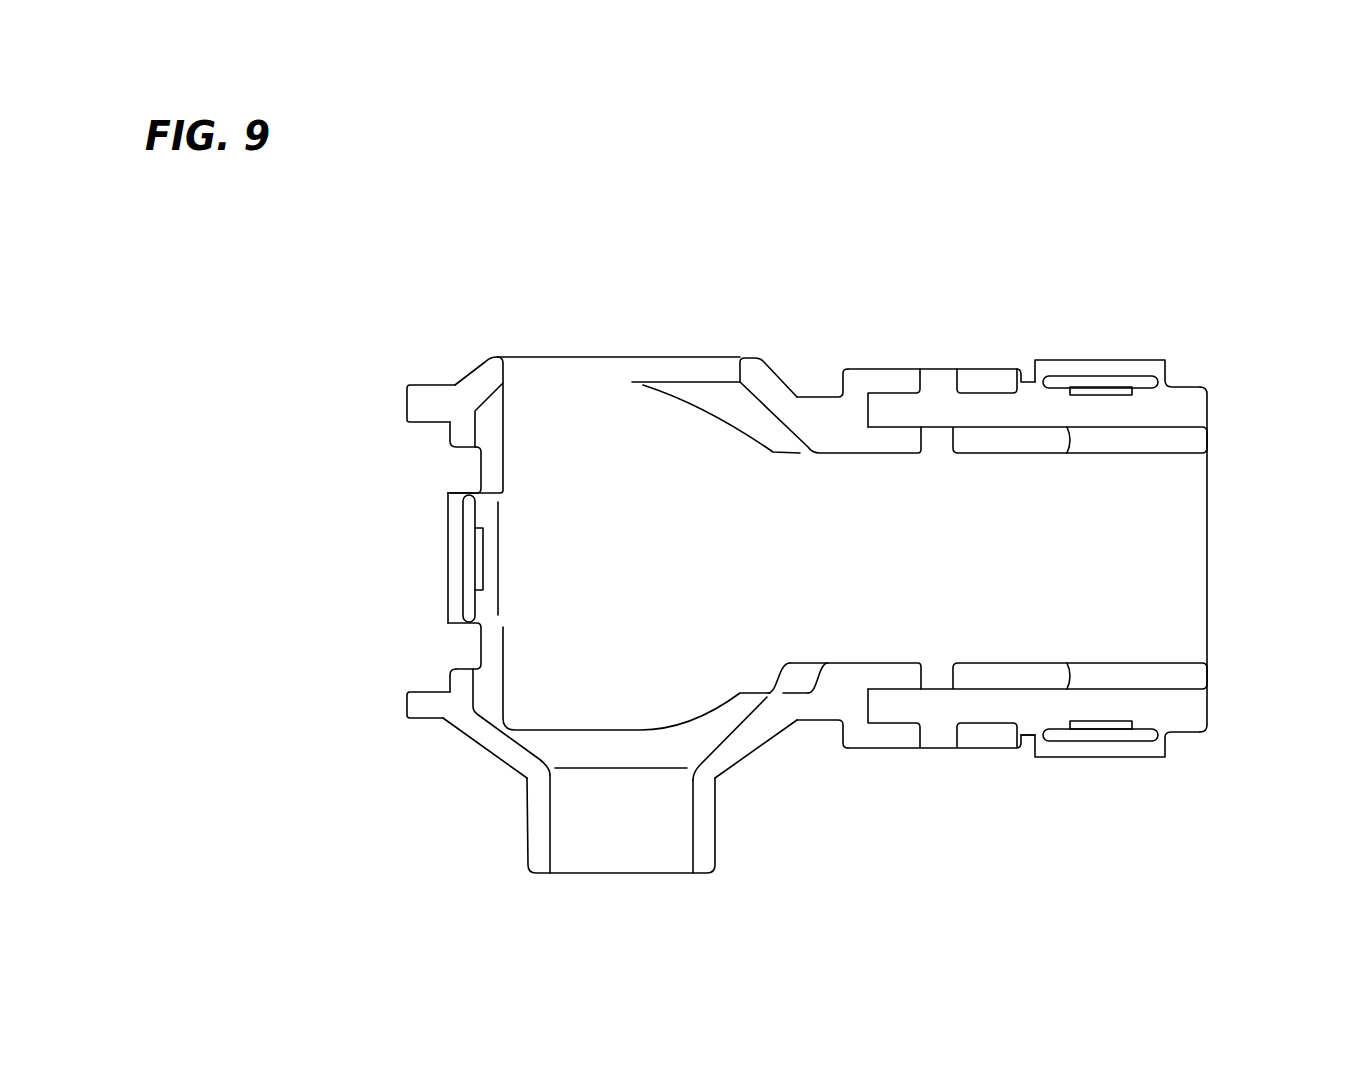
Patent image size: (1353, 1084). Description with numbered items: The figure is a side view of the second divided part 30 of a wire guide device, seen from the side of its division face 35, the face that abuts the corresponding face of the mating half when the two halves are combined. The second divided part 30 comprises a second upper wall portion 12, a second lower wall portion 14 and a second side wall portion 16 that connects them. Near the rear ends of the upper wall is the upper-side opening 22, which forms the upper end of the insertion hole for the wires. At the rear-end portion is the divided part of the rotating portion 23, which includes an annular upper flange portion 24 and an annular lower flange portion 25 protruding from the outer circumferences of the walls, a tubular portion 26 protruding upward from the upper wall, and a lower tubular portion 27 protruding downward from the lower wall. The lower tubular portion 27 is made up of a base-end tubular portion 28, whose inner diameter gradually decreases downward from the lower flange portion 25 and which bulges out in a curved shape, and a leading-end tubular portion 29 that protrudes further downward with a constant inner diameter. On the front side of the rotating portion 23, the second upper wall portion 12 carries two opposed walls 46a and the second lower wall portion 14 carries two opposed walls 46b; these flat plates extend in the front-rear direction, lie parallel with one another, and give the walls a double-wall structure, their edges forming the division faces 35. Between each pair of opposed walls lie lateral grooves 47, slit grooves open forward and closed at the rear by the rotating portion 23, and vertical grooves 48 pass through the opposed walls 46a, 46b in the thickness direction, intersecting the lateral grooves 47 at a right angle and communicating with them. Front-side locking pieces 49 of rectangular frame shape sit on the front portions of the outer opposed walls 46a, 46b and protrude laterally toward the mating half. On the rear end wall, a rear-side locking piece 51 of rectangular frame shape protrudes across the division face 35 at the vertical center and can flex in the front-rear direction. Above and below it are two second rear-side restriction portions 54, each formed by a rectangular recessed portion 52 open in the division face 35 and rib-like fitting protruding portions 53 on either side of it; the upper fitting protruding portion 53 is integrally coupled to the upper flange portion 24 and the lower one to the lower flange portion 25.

The second upper wall portion 12 is at (853, 368).
The second lower wall portion 14 is at (853, 750).
The second side wall portion 16 is at (1180, 552).
The upper-side opening 22 is at (740, 368).
The rotating portion 23 is at (490, 310).
The upper flange portion 24 is at (427, 397).
The lower flange portion 25 is at (430, 714).
The tubular portion 26 is at (478, 375).
The lower tubular portion 27 is at (445, 798).
The base-end tubular portion 28 is at (503, 753).
The leading-end tubular portion 29 is at (535, 857).
The second divided part 30 is at (623, 357).
The division face 35 is at (830, 405).
The opposed walls 46a is at (1013, 443).
The opposed walls 46b is at (1013, 673).
The lateral grooves 47 is at (901, 390).
The vertical grooves 48 is at (922, 379).
The front-side locking pieces 49 is at (1098, 360).
The rear-side locking piece 51 is at (453, 563).
The recessed portions 52 is at (481, 468).
The fitting protruding portions 53 is at (450, 433).
The second rear-side restriction portions 54 is at (352, 415).